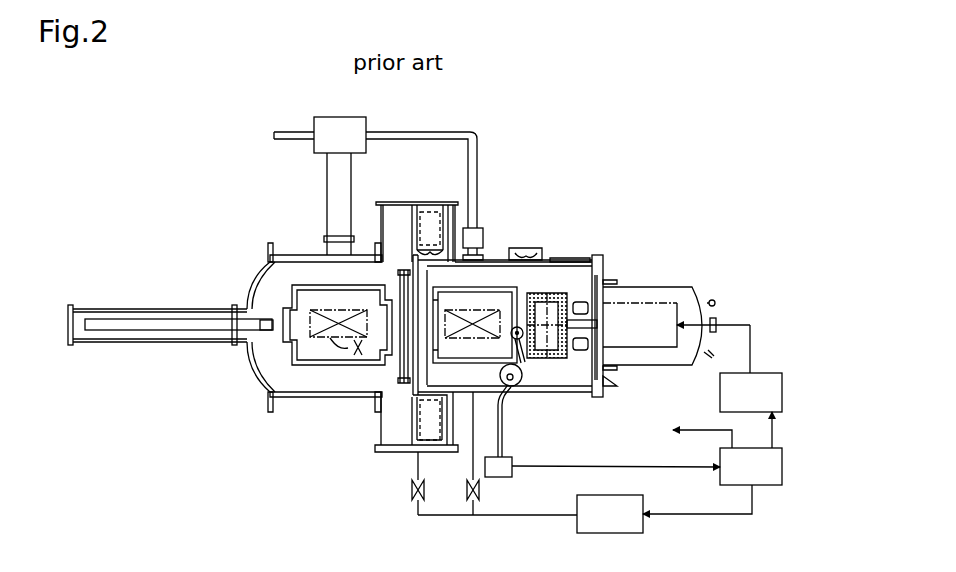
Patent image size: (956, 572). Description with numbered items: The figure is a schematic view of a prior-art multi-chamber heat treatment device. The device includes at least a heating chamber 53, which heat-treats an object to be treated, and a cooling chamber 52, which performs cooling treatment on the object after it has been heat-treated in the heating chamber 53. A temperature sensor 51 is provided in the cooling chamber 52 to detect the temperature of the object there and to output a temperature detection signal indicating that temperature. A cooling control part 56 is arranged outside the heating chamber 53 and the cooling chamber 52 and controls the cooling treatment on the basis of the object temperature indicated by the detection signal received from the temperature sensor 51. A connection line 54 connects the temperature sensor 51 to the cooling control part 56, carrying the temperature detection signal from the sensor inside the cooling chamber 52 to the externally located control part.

The temperature sensor 51 is at (471, 330).
The cooling chamber 52 is at (528, 234).
The heating chamber 53 is at (300, 232).
The connection line 54 is at (510, 326).
The cooling control part 56 is at (783, 462).